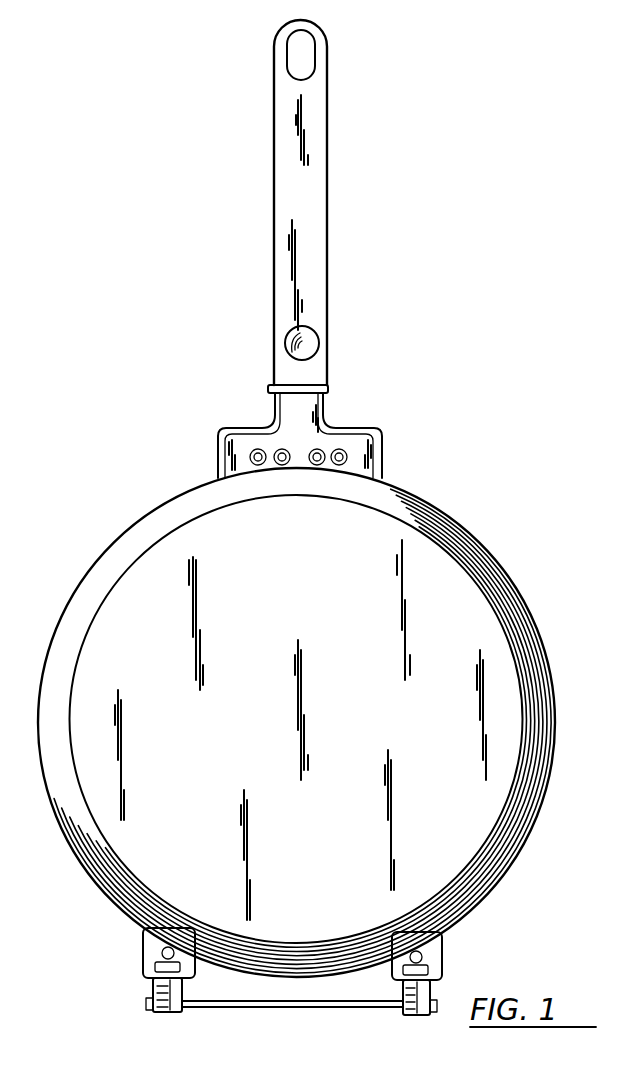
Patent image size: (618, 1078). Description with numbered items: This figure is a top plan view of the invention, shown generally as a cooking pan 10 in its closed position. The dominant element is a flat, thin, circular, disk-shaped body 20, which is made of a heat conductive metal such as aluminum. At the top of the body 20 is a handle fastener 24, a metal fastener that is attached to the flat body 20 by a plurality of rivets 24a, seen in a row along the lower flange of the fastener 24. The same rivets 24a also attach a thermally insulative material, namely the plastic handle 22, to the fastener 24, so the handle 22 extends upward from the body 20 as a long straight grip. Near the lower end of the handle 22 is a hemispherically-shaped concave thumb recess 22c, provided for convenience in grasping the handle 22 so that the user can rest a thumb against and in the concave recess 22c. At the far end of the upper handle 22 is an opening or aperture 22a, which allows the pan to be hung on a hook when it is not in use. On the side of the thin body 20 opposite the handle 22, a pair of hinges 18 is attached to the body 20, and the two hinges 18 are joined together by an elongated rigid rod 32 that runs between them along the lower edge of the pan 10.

The cooking pan 10 is at (478, 473).
The hinges 18 is at (134, 989).
The body 20 is at (468, 594).
The handle 22 is at (305, 201).
The aperture 22a is at (318, 37).
The thumb recess 22c is at (310, 345).
The handle fastener 24 is at (318, 413).
The rivets 24a is at (345, 455).
The rod 32 is at (298, 1010).